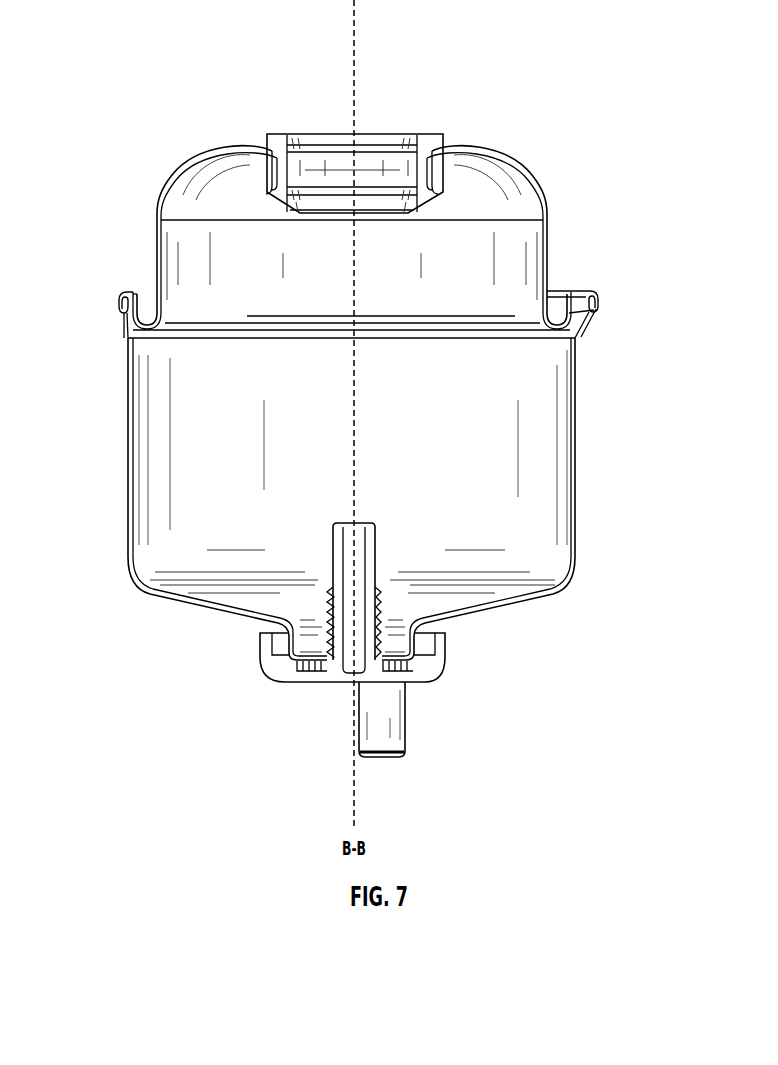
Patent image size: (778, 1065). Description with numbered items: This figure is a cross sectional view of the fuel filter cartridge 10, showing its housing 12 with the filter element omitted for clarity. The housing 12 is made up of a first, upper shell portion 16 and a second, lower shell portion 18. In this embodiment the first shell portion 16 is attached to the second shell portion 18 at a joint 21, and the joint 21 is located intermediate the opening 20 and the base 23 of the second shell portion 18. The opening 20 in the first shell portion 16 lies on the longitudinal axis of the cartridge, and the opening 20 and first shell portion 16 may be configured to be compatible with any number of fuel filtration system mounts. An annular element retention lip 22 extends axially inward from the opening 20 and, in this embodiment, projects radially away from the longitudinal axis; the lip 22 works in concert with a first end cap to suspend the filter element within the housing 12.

The fuel filter cartridge 10 is at (163, 98).
The housing 12 is at (100, 298).
The first shell portion 16 is at (525, 167).
The second shell portion 18 is at (575, 492).
The opening 20 is at (310, 168).
The joint 21 is at (592, 318).
The annular element retention lip 22 is at (437, 188).
The base 23 is at (482, 615).